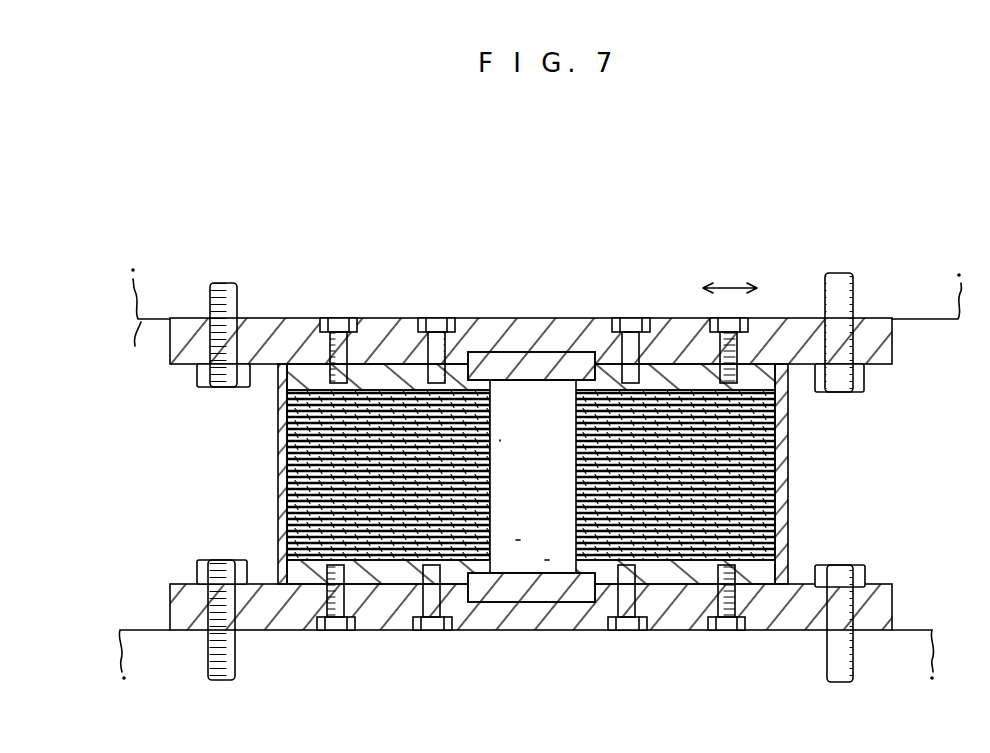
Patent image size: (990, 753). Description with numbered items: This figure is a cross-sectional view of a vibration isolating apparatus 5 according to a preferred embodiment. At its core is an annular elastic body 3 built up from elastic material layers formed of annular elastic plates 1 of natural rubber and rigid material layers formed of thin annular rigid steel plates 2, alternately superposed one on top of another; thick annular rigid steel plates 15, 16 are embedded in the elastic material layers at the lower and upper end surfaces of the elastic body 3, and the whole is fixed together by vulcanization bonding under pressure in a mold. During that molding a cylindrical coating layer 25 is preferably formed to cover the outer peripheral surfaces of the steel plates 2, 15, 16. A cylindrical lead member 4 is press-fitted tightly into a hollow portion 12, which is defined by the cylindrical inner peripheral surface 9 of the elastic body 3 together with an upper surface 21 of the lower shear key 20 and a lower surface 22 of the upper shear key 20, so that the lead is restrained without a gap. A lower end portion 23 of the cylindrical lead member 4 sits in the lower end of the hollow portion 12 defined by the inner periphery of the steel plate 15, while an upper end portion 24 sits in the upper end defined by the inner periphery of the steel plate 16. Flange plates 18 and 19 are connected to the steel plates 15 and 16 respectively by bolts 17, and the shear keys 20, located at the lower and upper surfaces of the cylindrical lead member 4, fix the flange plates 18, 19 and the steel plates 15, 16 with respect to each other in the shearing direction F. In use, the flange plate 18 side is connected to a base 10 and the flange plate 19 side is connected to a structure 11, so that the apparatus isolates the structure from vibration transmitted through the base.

The annular elastic plate 1 is at (780, 520).
The thin annular rigid steel plate 2 is at (284, 507).
The annular elastic body 3 is at (790, 480).
The cylindrical lead member 4 is at (508, 560).
The vibration isolating apparatus 5 is at (822, 433).
The inner peripheral surface 9 is at (489, 552).
The base 10 is at (145, 636).
The structure 11 is at (141, 330).
The hollow portion 12 is at (478, 364).
The thick annular rigid steel plate 15 is at (385, 576).
The thick annular rigid steel plate 16 is at (379, 372).
The bolt 17 is at (338, 318).
The flange plate 18 is at (892, 613).
The flange plate 19 is at (895, 344).
The shear key 20 is at (534, 366).
The upper surface 21 is at (518, 530).
The lower surface 22 is at (562, 378).
The lower end portion 23 is at (547, 560).
The upper end portion 24 is at (529, 454).
The cylindrical coating layer 25 is at (278, 418).
The shearing direction F is at (731, 288).